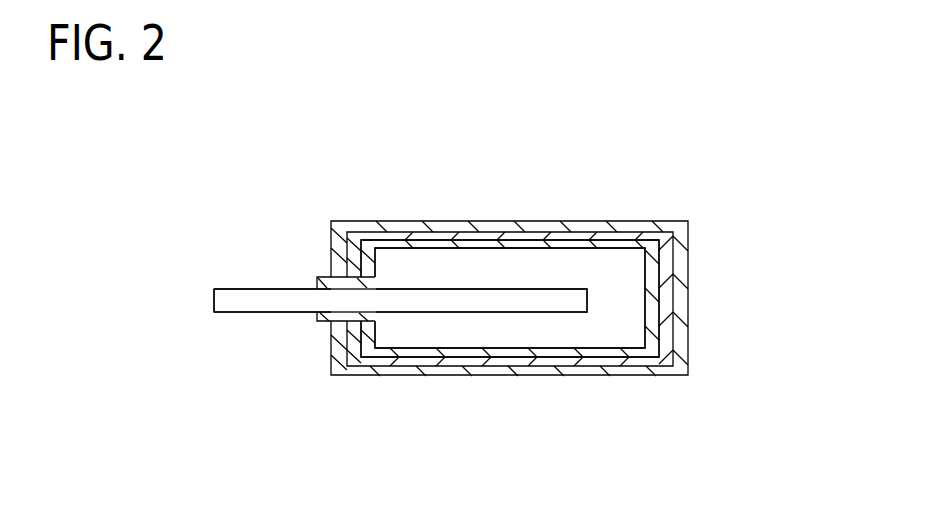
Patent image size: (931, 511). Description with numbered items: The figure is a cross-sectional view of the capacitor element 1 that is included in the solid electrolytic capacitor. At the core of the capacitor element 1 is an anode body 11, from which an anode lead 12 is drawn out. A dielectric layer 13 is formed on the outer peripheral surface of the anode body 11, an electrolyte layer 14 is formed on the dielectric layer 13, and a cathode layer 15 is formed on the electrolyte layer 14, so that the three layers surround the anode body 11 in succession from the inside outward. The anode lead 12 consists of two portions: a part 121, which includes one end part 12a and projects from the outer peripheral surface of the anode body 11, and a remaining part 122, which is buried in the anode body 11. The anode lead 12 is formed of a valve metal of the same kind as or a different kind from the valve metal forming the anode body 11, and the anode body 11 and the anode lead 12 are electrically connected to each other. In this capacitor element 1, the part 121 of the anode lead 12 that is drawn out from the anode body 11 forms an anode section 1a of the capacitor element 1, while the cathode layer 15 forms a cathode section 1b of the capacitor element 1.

The capacitor element 1 is at (553, 130).
The anode section 1a is at (269, 336).
The cathode section 1b is at (502, 253).
The anode body 11 is at (418, 272).
The anode lead 12 is at (447, 300).
The one end part 12a is at (213, 297).
The part 121 is at (267, 297).
The remaining part 122 is at (503, 295).
The dielectric layer 13 is at (484, 243).
The electrolyte layer 14 is at (514, 236).
The cathode layer 15 is at (547, 227).